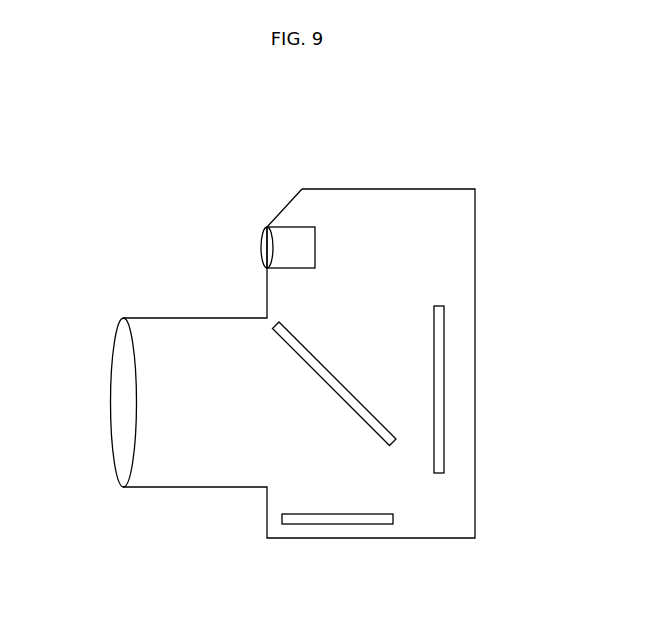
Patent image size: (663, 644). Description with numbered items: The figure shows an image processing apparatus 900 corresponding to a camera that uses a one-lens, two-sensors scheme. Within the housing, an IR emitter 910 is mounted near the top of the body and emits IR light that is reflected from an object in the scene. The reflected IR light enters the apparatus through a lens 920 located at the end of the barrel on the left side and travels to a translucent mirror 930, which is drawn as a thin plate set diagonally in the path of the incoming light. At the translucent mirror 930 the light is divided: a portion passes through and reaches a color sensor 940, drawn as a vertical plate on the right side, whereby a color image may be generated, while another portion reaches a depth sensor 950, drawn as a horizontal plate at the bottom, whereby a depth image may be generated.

The image processing apparatus 900 is at (383, 189).
The IR emitter 910 is at (293, 232).
The lens 920 is at (120, 402).
The translucent mirror 930 is at (280, 335).
The color sensor 940 is at (438, 385).
The depth sensor 950 is at (339, 518).